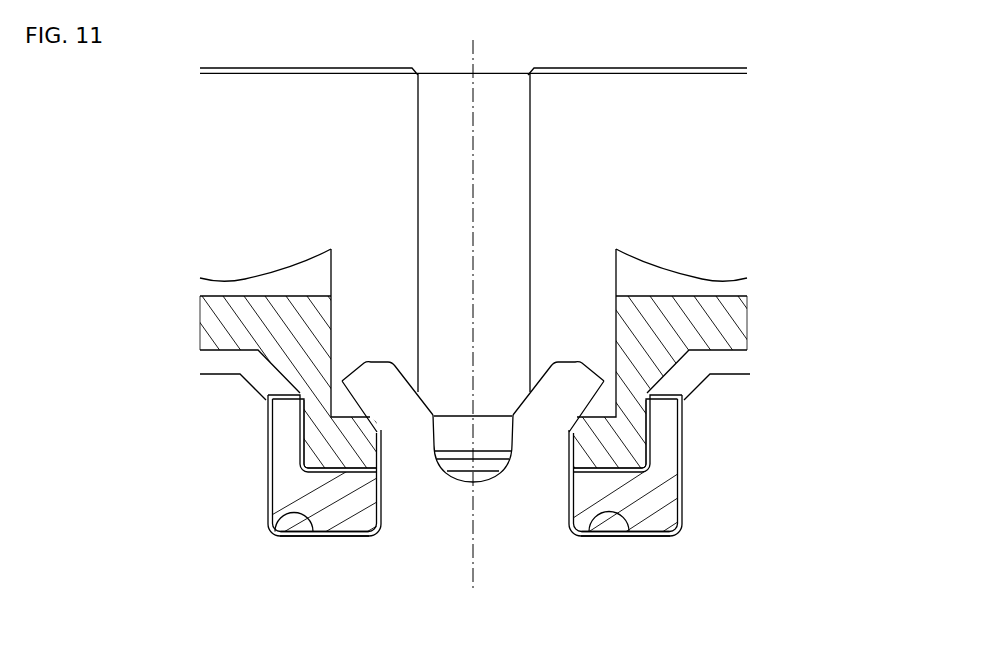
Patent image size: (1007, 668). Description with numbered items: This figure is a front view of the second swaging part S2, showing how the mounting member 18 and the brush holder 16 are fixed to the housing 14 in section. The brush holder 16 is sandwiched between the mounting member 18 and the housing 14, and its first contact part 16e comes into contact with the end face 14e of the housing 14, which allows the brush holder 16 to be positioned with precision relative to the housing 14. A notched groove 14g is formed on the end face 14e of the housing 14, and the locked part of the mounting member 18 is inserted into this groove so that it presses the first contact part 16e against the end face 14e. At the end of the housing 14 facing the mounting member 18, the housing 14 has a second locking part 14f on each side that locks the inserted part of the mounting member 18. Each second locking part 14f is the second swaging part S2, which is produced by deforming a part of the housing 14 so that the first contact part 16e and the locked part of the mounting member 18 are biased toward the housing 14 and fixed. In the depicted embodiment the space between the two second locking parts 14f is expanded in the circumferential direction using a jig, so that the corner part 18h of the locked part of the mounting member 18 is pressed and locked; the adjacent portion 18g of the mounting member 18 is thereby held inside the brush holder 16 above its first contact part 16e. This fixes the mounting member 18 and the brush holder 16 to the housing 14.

The housing 14 is at (541, 570).
The end face of the housing 14e is at (270, 530).
The second locking part 14f is at (377, 382).
The notched groove 14g is at (358, 502).
The brush holder 16 is at (692, 434).
The first contact part 16e is at (327, 531).
The mounting member 18 is at (629, 127).
The engaged portion of cover member in cup 18g is at (330, 436).
The corner part 18h is at (575, 423).
The second swaging part S2 is at (451, 383).